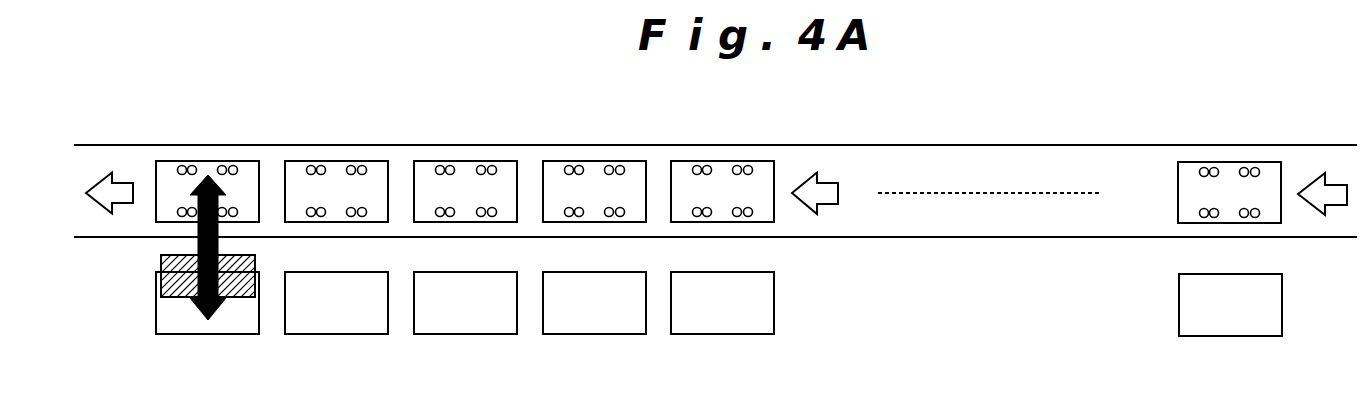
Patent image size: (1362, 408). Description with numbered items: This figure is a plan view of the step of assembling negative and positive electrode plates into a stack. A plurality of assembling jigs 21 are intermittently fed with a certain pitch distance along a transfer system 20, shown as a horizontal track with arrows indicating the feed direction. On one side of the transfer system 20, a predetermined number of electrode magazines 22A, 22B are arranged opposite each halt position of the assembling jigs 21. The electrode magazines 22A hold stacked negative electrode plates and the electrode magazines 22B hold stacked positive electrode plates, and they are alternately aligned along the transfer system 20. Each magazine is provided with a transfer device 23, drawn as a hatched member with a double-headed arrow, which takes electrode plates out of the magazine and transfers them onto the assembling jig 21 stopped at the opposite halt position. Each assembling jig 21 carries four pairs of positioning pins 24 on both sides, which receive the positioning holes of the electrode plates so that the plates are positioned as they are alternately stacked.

The transfer system 20 is at (934, 150).
The assembling jig 21 is at (340, 160).
The electrode magazine 22A is at (225, 335).
The electrode magazine 22B is at (345, 335).
The transfer device 23 is at (161, 260).
The positioning pins 24 is at (492, 170).